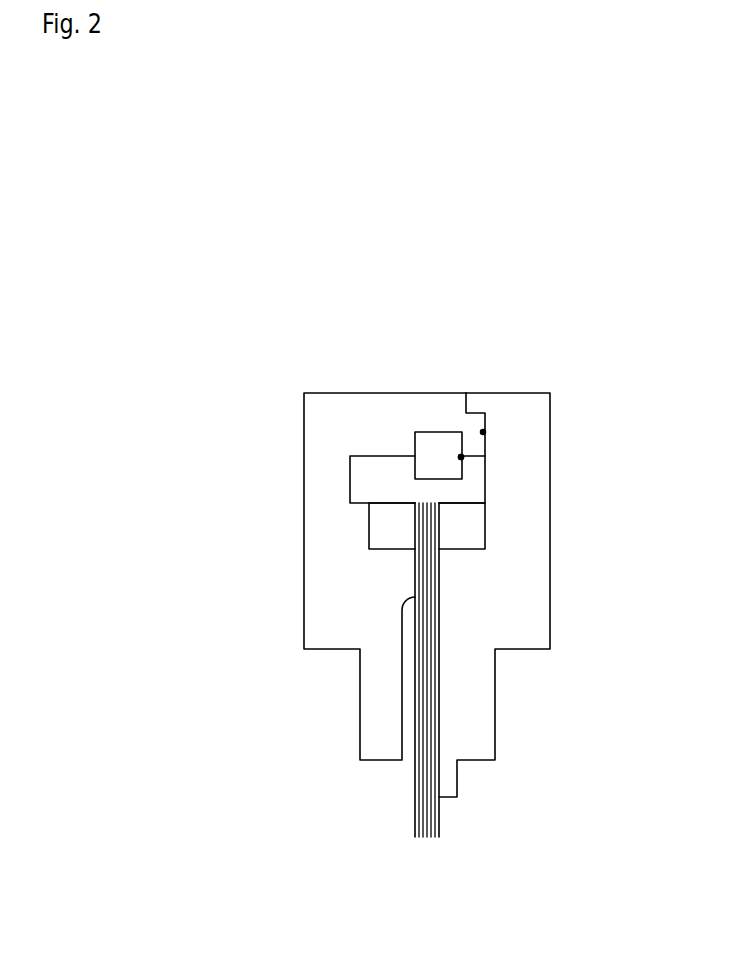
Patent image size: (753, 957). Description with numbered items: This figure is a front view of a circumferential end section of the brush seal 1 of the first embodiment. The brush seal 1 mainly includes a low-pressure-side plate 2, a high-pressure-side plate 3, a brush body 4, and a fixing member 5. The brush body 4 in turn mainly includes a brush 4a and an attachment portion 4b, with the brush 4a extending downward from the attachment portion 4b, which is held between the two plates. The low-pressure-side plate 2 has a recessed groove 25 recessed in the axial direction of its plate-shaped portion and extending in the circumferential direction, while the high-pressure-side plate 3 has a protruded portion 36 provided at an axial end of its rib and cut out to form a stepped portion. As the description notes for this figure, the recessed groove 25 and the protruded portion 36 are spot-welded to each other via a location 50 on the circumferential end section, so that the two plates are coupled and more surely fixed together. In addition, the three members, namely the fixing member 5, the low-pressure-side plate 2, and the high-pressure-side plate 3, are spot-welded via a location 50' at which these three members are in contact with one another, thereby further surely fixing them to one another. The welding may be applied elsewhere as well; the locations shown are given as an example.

The brush seal 1 is at (547, 358).
The low-pressure-side plate 2 is at (533, 570).
The high-pressure-side plate 3 is at (320, 570).
The brush body 4 is at (443, 600).
The brush 4a is at (415, 810).
The attachment portion 4b is at (383, 530).
The fixing member 5 is at (438, 457).
The recessed groove 25 is at (461, 457).
The protruded portion 36 is at (476, 423).
The location 50 is at (553, 443).
The location 50' is at (535, 491).